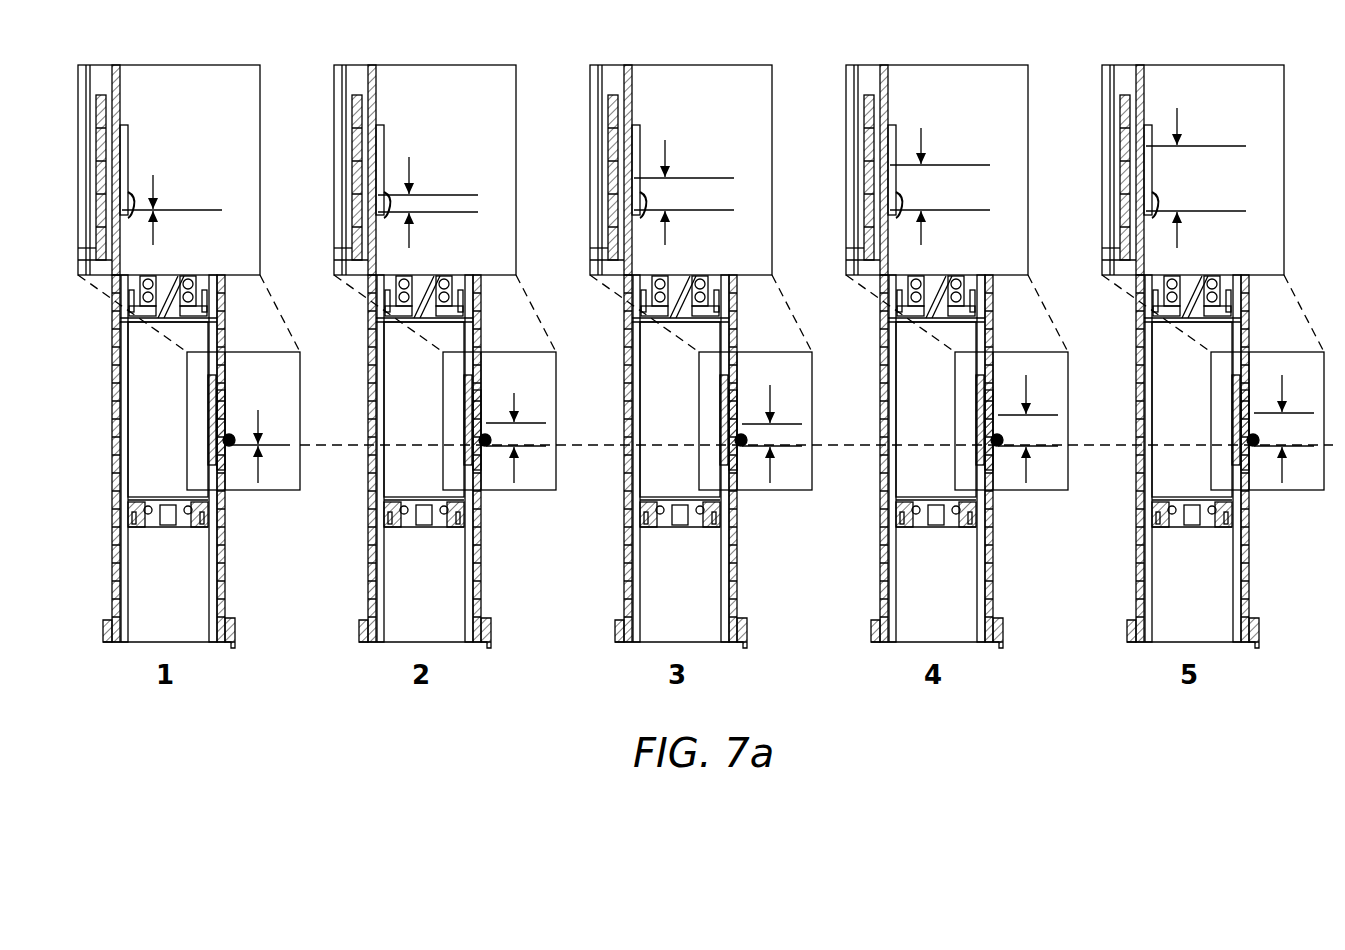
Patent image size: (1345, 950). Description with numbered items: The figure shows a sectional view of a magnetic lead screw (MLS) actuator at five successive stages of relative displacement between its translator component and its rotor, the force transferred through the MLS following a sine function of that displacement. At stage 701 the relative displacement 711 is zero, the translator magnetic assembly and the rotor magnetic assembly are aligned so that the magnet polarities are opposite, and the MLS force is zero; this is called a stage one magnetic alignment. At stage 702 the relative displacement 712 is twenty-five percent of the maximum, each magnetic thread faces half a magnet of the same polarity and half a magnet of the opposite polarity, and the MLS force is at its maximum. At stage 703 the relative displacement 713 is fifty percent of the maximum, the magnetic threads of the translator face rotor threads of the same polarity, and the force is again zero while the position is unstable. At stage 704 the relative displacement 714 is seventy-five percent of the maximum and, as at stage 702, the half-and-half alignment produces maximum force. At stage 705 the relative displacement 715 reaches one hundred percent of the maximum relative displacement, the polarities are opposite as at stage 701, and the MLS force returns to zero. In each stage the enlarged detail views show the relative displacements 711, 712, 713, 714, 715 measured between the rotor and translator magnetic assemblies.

The stage 701 is at (150, 54).
The stage 702 is at (406, 54).
The stage 703 is at (662, 54).
The stage 704 is at (918, 54).
The stage 705 is at (1174, 54).
The relative displacement 711 is at (139, 166).
The relative displacement 712 is at (395, 152).
The relative displacement 713 is at (653, 204).
The relative displacement 714 is at (909, 198).
The relative displacement 715 is at (1165, 197).